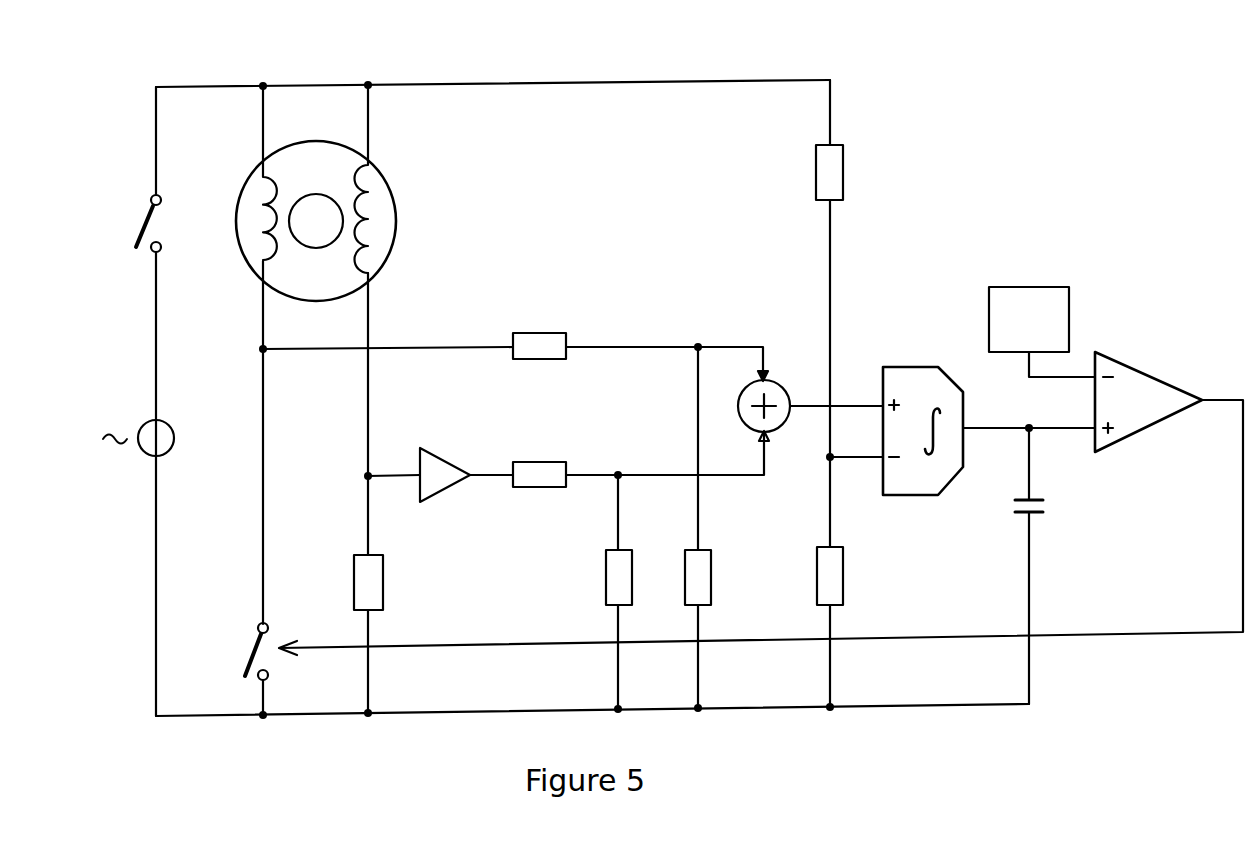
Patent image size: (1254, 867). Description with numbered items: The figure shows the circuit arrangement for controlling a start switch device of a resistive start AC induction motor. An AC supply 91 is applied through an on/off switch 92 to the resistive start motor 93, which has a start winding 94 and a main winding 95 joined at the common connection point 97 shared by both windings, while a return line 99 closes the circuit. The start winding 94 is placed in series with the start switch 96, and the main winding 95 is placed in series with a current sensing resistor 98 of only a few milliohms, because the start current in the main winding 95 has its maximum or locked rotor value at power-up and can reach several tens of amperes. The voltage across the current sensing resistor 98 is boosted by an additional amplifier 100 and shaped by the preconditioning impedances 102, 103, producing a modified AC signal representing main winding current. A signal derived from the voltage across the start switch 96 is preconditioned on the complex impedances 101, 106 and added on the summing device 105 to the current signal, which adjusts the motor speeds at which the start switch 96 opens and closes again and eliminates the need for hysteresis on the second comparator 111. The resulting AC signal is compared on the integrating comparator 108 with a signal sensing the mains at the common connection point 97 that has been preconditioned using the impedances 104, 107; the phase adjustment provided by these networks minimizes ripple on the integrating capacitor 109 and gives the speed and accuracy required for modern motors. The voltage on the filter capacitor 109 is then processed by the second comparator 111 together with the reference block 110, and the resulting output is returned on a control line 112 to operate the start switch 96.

The AC power source 91 is at (135, 453).
The main switch 92 is at (142, 218).
The resistive start motor 93 is at (317, 138).
The first motor winding 94 is at (260, 203).
The main winding 95 is at (366, 214).
The start switch 96 is at (248, 647).
The common connection point 97 is at (500, 82).
The current sensing resistor 98 is at (383, 580).
The return line 99 is at (417, 720).
The amplifier 100 is at (440, 452).
The complex impedance 101 is at (552, 330).
The preconditioning impedance 102 is at (542, 460).
The preconditioning impedance 103 is at (605, 590).
The preconditioning impedance 104 is at (845, 182).
The summing device 105 is at (783, 380).
The complex impedance 106 is at (712, 588).
The preconditioning impedance 107 is at (845, 588).
The integrating comparator 108 is at (927, 497).
The integrating capacitor 109 is at (1043, 503).
The reference block 110 is at (1025, 285).
The second comparator 111 is at (1145, 367).
The control line 112 is at (1088, 637).